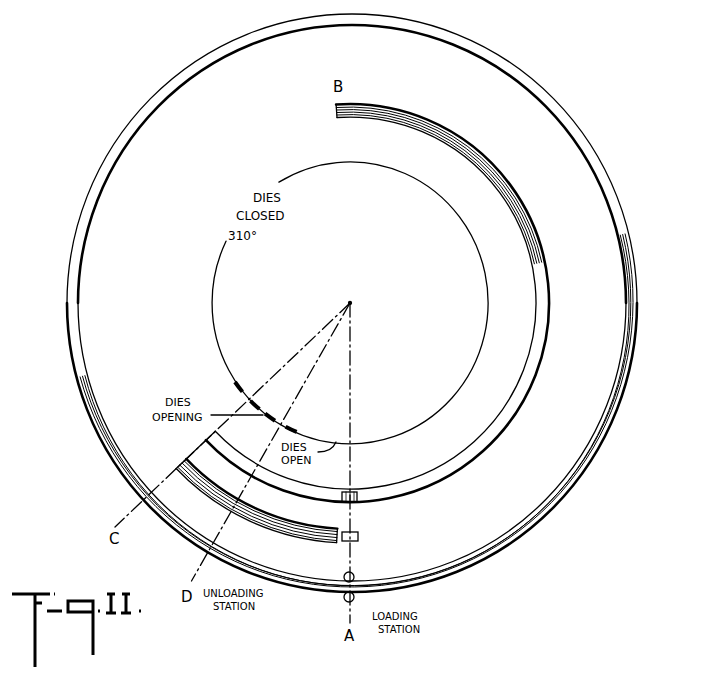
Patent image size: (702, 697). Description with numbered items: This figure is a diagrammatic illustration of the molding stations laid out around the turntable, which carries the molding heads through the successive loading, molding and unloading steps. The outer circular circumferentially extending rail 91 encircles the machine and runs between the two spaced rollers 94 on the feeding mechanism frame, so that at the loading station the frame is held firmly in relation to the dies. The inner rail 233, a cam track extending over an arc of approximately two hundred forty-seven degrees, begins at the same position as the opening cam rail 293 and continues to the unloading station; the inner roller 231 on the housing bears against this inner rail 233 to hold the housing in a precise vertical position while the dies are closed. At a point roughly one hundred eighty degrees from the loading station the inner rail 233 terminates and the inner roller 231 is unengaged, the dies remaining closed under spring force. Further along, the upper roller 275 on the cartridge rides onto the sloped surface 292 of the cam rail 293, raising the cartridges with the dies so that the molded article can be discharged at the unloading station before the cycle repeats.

The rail 91 is at (481, 45).
The inner rail 233 is at (437, 480).
The inner roller 231 is at (358, 500).
The upper roller 275 is at (358, 537).
The sloped surface 292 is at (213, 492).
The cam rail 293 is at (312, 530).
The rollers 94 is at (354, 592).